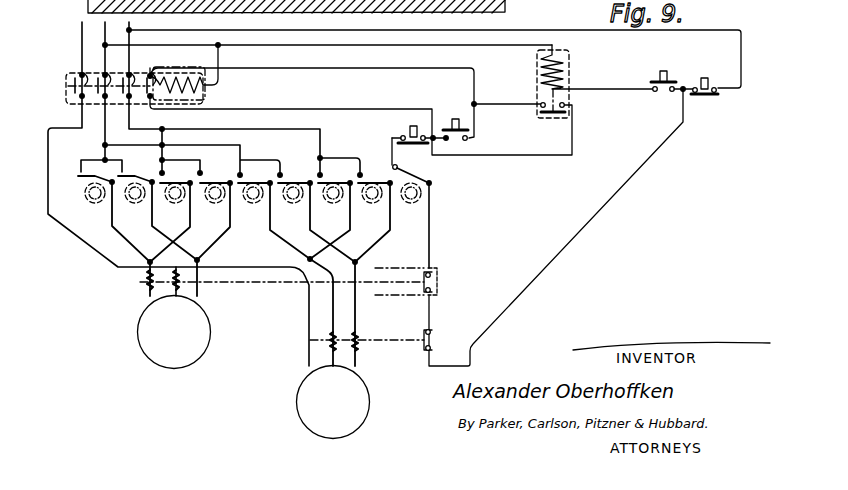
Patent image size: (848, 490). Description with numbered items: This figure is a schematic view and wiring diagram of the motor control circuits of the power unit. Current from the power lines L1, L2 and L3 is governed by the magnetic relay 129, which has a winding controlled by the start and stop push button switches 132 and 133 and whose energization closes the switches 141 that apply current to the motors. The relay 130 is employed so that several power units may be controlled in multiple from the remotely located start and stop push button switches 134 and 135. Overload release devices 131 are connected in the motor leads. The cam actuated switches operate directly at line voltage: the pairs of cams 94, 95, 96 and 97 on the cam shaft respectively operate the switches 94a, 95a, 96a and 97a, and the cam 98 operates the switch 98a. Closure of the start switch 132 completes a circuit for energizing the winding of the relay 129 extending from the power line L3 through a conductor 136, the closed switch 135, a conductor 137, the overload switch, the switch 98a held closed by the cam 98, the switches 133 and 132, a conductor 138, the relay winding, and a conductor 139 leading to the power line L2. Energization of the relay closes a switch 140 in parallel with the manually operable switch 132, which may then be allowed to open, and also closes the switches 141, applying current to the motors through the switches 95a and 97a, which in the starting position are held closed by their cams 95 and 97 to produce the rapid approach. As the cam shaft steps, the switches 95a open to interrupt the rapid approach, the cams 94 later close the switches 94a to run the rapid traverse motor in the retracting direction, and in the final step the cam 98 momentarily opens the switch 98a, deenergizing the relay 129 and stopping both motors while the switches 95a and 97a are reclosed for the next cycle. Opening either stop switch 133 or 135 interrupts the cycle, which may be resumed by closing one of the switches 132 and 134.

The power line L1 is at (81, 47).
The power line L2 is at (103, 47).
The power line L3 is at (128, 47).
The cams 94 is at (206, 198).
The switches 94a is at (175, 172).
The cams 95 is at (126, 197).
The switches 95a is at (128, 166).
The cams 96 is at (351, 221).
The switches 96a is at (328, 171).
The cams 97 is at (286, 200).
The switches 97a is at (244, 171).
The cam 98 is at (288, 266).
The switch 98a is at (404, 171).
The magnetic relay 129 is at (205, 94).
The relay 130 is at (565, 80).
The overload release devices 131 is at (146, 292).
The start push button switch 132 is at (468, 140).
The stop push button switch 133 is at (406, 134).
The remote start push button switch 134 is at (664, 95).
The remote stop push button switch 135 is at (714, 86).
The conductor 136 is at (320, 31).
The conductor 137 is at (579, 234).
The conductor 138 is at (364, 67).
The conductor 139 is at (175, 50).
The switch 140 is at (150, 70).
The switches 141 is at (78, 69).